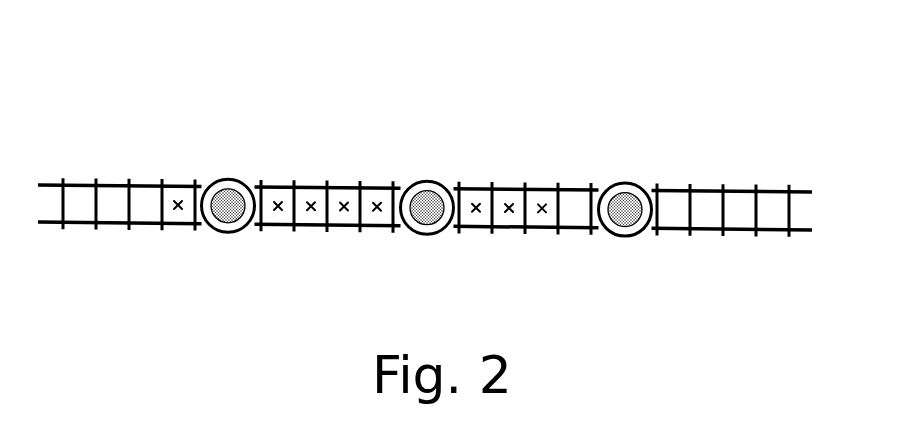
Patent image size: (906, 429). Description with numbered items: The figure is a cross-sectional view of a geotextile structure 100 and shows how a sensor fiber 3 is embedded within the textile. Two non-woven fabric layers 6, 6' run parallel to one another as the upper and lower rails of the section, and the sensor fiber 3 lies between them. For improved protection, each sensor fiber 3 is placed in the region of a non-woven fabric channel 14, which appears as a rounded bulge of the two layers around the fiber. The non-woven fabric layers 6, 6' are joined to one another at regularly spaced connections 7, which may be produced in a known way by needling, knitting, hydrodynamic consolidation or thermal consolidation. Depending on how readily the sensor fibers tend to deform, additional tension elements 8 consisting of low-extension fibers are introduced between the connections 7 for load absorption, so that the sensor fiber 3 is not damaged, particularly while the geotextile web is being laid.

The ladder structure 100 is at (176, 78).
The non-woven fabric layer 6 is at (425, 170).
The non-woven fabric layer 6' is at (425, 244).
The connection 7 is at (130, 184).
The sensor fiber 3 is at (242, 178).
The non-woven fabric channel 14 is at (417, 184).
The tension element 8 is at (287, 183).